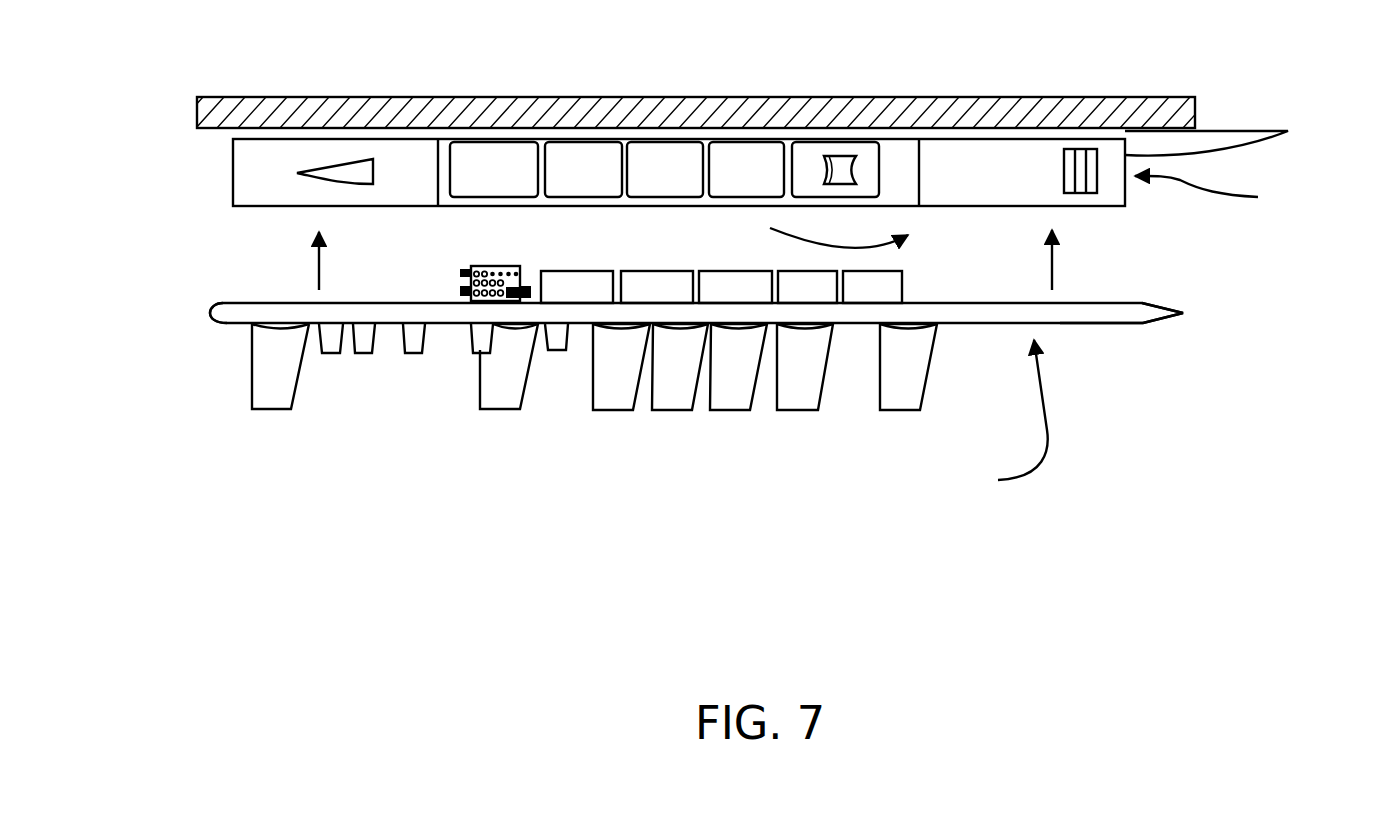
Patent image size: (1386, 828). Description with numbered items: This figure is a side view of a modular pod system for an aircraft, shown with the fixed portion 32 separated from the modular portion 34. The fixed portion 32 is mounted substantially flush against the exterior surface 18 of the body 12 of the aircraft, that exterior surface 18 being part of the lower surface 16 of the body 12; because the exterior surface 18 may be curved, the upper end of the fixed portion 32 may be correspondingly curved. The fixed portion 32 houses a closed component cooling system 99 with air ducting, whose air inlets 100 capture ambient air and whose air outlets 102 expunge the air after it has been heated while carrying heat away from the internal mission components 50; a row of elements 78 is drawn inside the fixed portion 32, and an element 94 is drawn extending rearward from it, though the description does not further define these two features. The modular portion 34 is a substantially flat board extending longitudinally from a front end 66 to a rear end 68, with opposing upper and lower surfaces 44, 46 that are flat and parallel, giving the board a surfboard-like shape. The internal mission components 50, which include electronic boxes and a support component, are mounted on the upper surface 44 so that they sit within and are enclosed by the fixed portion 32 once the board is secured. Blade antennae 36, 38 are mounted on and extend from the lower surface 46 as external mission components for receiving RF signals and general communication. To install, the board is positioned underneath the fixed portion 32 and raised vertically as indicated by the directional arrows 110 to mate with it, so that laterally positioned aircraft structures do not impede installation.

The body 12 is at (940, 110).
The lower surface 16 is at (515, 133).
The exterior surface 18 is at (318, 134).
The battery cells 78 is at (593, 150).
The air inlets 100 is at (843, 155).
The air outlets 102 is at (1094, 188).
The latch 94 is at (1288, 131).
The fixed portion 32 is at (1214, 193).
The component cooling system 99 is at (823, 233).
The directional arrows 110 is at (319, 272).
The upper surface 44 is at (968, 298).
The front end 66 is at (210, 313).
The rear end 68 is at (1183, 313).
The modular portion 34 is at (1005, 418).
The lower surface 46 is at (1098, 325).
The internal mission components 50 is at (436, 284).
The blade antennae 36 is at (627, 410).
The blade antennae 38 is at (413, 353).